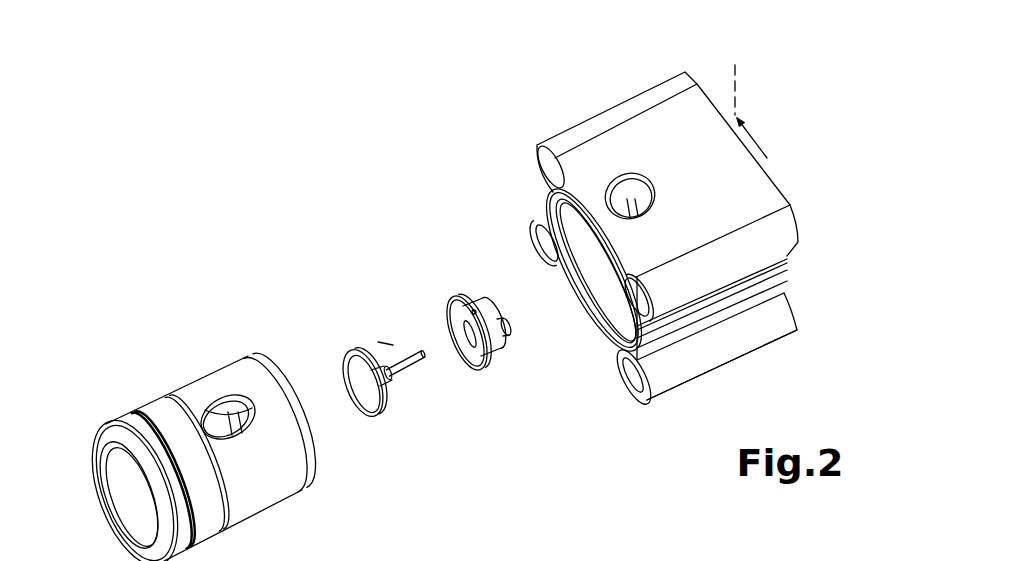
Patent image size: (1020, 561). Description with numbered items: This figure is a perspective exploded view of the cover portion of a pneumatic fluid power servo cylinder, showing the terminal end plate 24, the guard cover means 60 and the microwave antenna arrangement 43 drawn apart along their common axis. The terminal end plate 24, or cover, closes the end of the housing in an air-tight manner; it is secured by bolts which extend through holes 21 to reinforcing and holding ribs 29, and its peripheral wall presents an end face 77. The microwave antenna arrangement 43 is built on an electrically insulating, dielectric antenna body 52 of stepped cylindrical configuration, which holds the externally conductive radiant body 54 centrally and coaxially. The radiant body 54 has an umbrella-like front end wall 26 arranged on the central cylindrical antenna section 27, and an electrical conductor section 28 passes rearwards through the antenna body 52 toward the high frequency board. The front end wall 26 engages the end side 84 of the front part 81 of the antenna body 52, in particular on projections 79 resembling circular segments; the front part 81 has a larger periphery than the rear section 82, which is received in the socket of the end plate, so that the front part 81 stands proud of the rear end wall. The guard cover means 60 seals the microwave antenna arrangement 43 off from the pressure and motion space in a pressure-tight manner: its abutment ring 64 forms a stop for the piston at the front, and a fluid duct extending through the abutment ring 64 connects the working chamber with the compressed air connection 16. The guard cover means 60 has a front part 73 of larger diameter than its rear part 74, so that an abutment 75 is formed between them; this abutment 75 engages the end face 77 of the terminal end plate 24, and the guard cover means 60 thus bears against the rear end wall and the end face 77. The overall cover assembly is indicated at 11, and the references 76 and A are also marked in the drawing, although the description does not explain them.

The valve housing 11 is at (497, 140).
The compressed air connection 16 is at (635, 187).
The holes 21 is at (540, 250).
The terminal end plate 24 is at (683, 393).
The front end wall 26 is at (365, 403).
The central cylindrical antenna section 27 is at (390, 383).
The electrical conductor section 28 is at (403, 367).
The reinforcing and holding ribs 29 is at (640, 92).
The microwave antenna arrangement 43 is at (378, 342).
The antenna body 52 is at (460, 308).
The radiant body 54 is at (338, 356).
The guard cover means 60 is at (178, 375).
The abutment ring 64 is at (105, 428).
The front part 73 is at (157, 412).
The rear part 74 is at (206, 385).
The abutment 75 is at (233, 527).
The cylinder bore 76 is at (602, 313).
The end face 77 is at (592, 315).
The projections 79 is at (466, 304).
The front part 81 is at (482, 302).
The rear section 82 is at (510, 328).
The end side 84 is at (448, 325).
The axis A is at (766, 131).